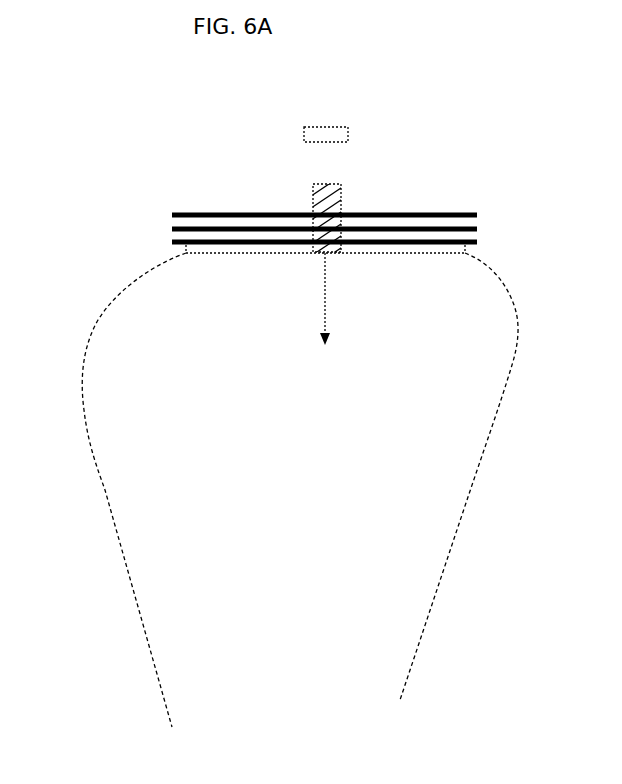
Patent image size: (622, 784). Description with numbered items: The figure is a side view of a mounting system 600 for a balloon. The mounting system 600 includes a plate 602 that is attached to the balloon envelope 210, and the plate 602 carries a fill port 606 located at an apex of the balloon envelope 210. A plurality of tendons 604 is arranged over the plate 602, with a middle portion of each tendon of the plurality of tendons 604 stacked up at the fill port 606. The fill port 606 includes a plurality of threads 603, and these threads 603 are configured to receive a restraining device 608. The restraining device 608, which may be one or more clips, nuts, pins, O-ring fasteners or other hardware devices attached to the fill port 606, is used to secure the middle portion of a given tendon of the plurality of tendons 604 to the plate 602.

The mounting system 600 is at (528, 35).
The balloon envelope 210 is at (105, 490).
The plate 602 is at (452, 255).
The plurality of tendons 604 is at (477, 242).
The fill port 606 is at (343, 194).
The threads 603 is at (296, 190).
The restraining device 608 is at (325, 134).